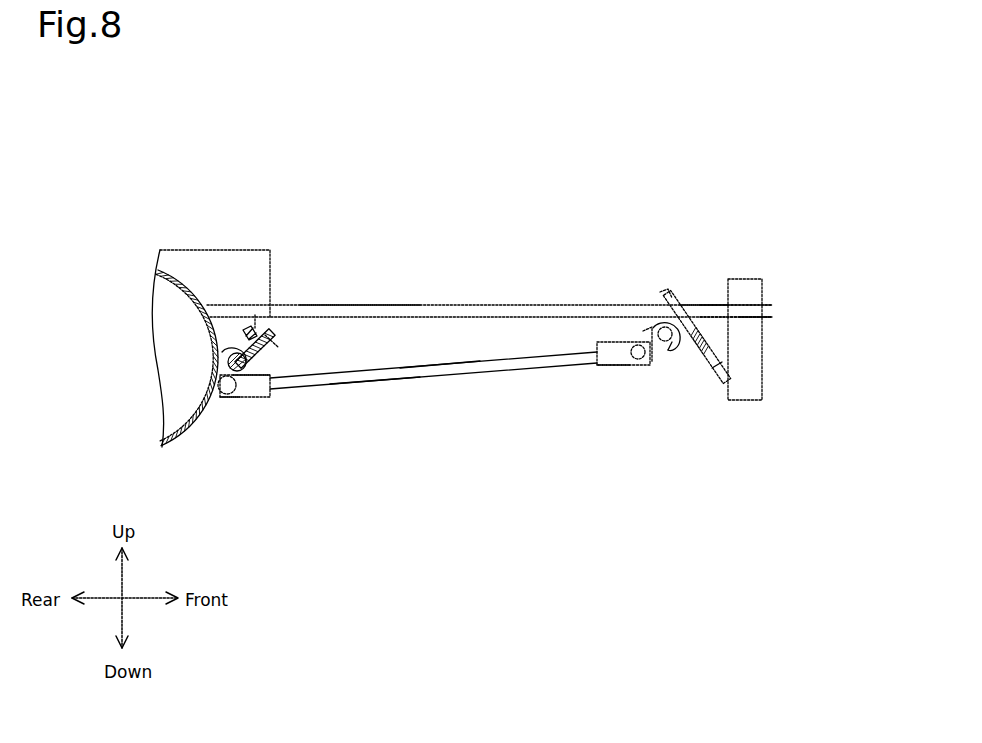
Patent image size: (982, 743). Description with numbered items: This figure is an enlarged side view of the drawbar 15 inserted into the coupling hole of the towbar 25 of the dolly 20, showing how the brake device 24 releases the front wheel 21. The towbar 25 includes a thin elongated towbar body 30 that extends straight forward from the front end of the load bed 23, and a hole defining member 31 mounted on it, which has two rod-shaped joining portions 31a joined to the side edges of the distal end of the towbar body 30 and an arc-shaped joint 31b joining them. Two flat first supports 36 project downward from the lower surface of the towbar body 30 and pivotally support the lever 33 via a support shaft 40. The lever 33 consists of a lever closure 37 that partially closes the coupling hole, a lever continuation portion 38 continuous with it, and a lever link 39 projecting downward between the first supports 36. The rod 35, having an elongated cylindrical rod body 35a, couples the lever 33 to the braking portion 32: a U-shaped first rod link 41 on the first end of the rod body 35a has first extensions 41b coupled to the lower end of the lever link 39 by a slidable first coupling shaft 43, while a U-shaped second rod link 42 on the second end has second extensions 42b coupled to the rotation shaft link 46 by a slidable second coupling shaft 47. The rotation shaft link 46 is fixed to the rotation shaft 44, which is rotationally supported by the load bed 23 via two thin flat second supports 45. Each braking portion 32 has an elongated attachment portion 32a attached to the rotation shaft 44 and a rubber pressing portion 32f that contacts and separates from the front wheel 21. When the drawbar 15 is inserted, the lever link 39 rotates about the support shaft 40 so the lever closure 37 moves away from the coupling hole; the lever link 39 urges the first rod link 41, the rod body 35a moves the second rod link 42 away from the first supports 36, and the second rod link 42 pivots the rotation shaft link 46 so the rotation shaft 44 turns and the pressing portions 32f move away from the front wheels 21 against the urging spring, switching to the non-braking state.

The drawbar 15 is at (747, 279).
The dolly 20 is at (160, 218).
The front wheel 21 is at (182, 443).
The load bed 23 is at (218, 250).
The brake device 24 is at (488, 435).
The towbar 25 is at (355, 304).
The towbar body 30 is at (406, 305).
The hole defining member 31 is at (772, 306).
The joining portion 31a is at (699, 306).
The joint 31b is at (772, 317).
The braking portion 32 is at (267, 328).
The attachment portion 32a is at (215, 352).
The pressing portion 32f is at (243, 327).
The lever 33 is at (690, 347).
The rod 35 is at (363, 382).
The rod body 35a is at (420, 375).
The first support 36 is at (650, 325).
The lever closure 37 is at (722, 383).
The lever continuation portion 38 is at (669, 298).
The lever link 39 is at (660, 352).
The support shaft 40 is at (670, 350).
The first rod link 41 is at (605, 366).
The first extension 41b is at (610, 344).
The second rod link 42 is at (260, 397).
The second extension 42b is at (260, 367).
The first coupling shaft 43 is at (632, 368).
The rotation shaft 44 is at (220, 360).
The second support 45 is at (228, 331).
The rotation shaft link 46 is at (222, 398).
The second coupling shaft 47 is at (218, 387).